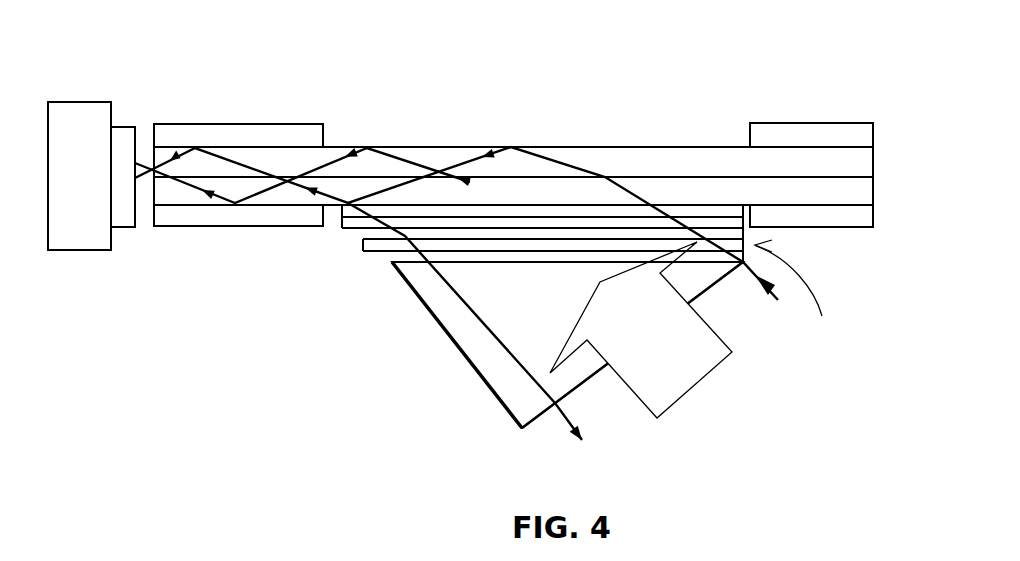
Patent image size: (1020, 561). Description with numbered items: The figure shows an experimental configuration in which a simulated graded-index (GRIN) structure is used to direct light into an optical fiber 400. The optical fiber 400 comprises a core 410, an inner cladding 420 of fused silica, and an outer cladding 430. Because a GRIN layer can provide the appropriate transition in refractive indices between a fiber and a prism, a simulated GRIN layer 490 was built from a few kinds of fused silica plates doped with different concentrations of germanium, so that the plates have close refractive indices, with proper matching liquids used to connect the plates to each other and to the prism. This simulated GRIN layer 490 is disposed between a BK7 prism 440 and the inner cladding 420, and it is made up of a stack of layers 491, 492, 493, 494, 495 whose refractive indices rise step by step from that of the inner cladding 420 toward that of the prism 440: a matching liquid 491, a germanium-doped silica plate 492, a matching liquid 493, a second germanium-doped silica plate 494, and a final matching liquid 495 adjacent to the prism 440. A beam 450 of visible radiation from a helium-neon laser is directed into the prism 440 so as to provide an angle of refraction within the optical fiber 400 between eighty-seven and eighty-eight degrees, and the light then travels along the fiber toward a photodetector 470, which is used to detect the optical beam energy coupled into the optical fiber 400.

The optical fiber 400 is at (540, 94).
The core 410 is at (645, 175).
The inner cladding 420 is at (725, 160).
The outer cladding 430 is at (243, 137).
The prism 440 is at (472, 352).
The beam 450 is at (678, 373).
The photodetector 470 is at (113, 88).
The simulated GRIN layer 490 is at (798, 290).
The matching liquid 491 is at (347, 222).
The germanium-doped silica plate 492 is at (362, 231).
The matching liquid 493 is at (362, 236).
The germanium-doped silica plate 494 is at (364, 251).
The matching liquid 495 is at (392, 262).